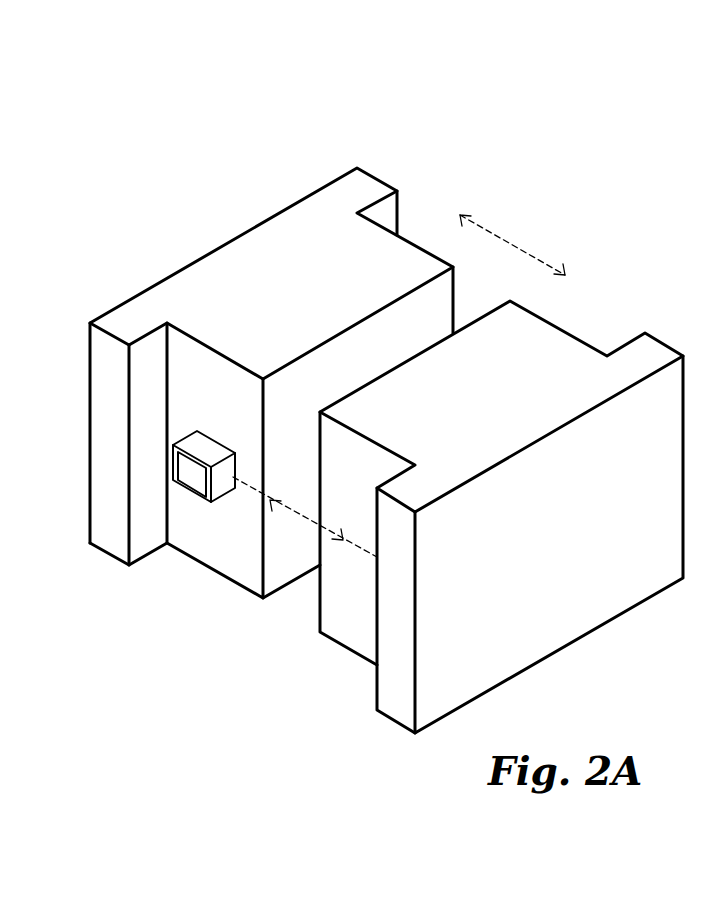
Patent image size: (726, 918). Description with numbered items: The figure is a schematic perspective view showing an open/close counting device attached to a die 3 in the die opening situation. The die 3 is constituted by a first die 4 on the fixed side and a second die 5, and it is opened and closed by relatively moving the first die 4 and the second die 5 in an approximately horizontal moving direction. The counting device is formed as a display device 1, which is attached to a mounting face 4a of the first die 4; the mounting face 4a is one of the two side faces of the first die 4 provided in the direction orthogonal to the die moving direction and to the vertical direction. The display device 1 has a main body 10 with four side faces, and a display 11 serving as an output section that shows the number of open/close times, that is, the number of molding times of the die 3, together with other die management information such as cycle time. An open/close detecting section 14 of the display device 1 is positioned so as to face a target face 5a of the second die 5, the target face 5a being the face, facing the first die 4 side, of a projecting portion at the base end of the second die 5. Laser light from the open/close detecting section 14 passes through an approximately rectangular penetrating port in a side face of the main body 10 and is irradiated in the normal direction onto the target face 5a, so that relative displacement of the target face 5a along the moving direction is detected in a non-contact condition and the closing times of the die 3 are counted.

The die 3 is at (203, 93).
The first die 4 is at (147, 273).
The mounting face 4a is at (249, 561).
The second die 5 is at (572, 320).
The target face 5a is at (387, 483).
The display device 1 is at (192, 497).
The main body 10 is at (223, 492).
The display 11 is at (184, 470).
The open/close detecting section 14 is at (224, 461).